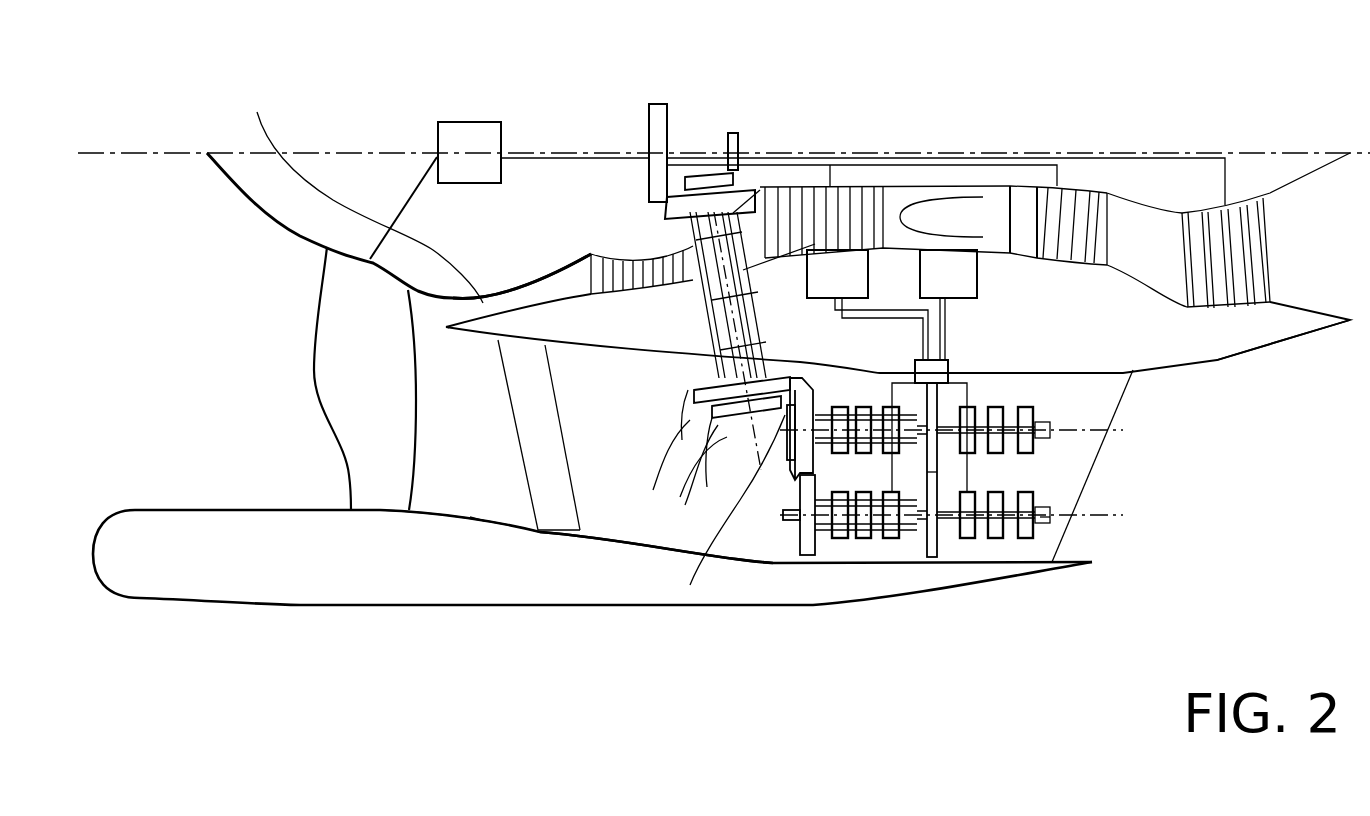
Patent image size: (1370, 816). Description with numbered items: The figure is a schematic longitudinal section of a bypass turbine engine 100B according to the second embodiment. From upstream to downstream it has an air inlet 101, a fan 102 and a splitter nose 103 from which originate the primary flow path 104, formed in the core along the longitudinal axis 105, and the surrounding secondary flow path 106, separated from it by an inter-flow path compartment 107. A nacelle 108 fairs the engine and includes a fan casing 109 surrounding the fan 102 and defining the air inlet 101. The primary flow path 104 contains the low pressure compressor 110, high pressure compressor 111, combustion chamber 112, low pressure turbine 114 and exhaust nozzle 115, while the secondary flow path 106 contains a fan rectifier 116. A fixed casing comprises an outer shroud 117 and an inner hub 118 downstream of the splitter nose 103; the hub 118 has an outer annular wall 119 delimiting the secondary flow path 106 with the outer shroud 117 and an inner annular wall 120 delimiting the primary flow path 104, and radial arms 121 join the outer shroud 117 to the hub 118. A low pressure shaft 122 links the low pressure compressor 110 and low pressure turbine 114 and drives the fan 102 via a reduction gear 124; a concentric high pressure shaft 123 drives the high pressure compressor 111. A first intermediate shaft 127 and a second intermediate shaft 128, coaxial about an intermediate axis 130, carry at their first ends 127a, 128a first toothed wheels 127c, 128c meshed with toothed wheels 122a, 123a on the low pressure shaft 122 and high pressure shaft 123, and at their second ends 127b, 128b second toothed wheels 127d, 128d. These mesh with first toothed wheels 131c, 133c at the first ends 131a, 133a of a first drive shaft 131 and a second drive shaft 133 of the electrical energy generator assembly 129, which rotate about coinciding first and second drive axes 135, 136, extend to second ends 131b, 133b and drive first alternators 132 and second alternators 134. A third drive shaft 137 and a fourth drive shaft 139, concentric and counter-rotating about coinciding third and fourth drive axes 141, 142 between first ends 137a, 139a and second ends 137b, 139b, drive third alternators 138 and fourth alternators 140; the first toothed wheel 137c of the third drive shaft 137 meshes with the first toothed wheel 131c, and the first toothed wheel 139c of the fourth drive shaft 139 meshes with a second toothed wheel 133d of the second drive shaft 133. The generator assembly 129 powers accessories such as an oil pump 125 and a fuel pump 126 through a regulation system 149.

The turbine engine 100B is at (1085, 580).
The air inlet 101 is at (115, 450).
The fan 102 is at (333, 327).
The splitter nose 103 is at (458, 332).
The primary flow path 104 is at (355, 192).
The longitudinal axis 105 is at (120, 153).
The secondary flow path 106 is at (417, 505).
The inter-flow path compartment 107 is at (1001, 323).
The nacelle 108 is at (592, 557).
The fan casing 109 is at (150, 512).
The low pressure compressor 110 is at (650, 265).
The high pressure compressor 111 is at (830, 190).
The combustion chamber 112 is at (940, 196).
The low pressure turbine 114 is at (1250, 205).
The exhaust nozzle 115 is at (1310, 305).
The fan rectifier 116 is at (540, 512).
The outer shroud 117 is at (477, 520).
The inner hub 118 is at (547, 343).
The outer annular wall 119 is at (633, 303).
The inner annular wall 120 is at (591, 254).
The arms 121 is at (583, 527).
The low pressure shaft 122 is at (1003, 160).
The toothed wheel 122a is at (650, 130).
The high pressure shaft 123 is at (1037, 187).
The toothed wheel 123a is at (737, 133).
The reduction gear 124 is at (438, 130).
The oil pump 125 is at (867, 305).
The fuel pump 126 is at (948, 305).
The first intermediate shaft 127 is at (712, 332).
The first end 127a is at (800, 190).
The second end 127b is at (705, 408).
The first toothed wheel 127c is at (745, 195).
The second toothed wheel 127d is at (658, 466).
The second intermediate shaft 128 is at (725, 362).
The first end 128a is at (710, 195).
The second end 128b is at (775, 462).
The first toothed wheel 128c is at (700, 195).
The second toothed wheel 128d is at (717, 465).
The electrical energy generator assembly 129 is at (1052, 488).
The intermediate axis 130 is at (700, 135).
The first drive shaft 131 is at (905, 407).
The first end 131a is at (843, 407).
The second end 131b is at (948, 380).
The first toothed wheel 131c is at (810, 400).
The first alternator 132 is at (795, 480).
The second drive shaft 133 is at (1090, 372).
The first end 133a is at (790, 515).
The second end 133b is at (1040, 420).
The first toothed wheel 133c is at (790, 470).
The second toothed wheel 133d is at (1030, 472).
The second alternator 134 is at (1030, 408).
The first drive axis 135 is at (1120, 432).
The second drive axis 136 is at (1121, 432).
The third drive shaft 137 is at (878, 540).
The first end 137a is at (840, 540).
The second end 137b is at (935, 545).
The first toothed wheel 137c is at (812, 540).
The third alternator 138 is at (862, 545).
The fourth drive shaft 139 is at (1005, 545).
The first end 139a is at (805, 555).
The second end 139b is at (1040, 517).
The first toothed wheel 139c is at (945, 560).
The fourth alternator 140 is at (1025, 545).
The third drive axis 141 is at (1120, 517).
The fourth drive axis 142 is at (1121, 517).
The regulation system 149 is at (950, 365).